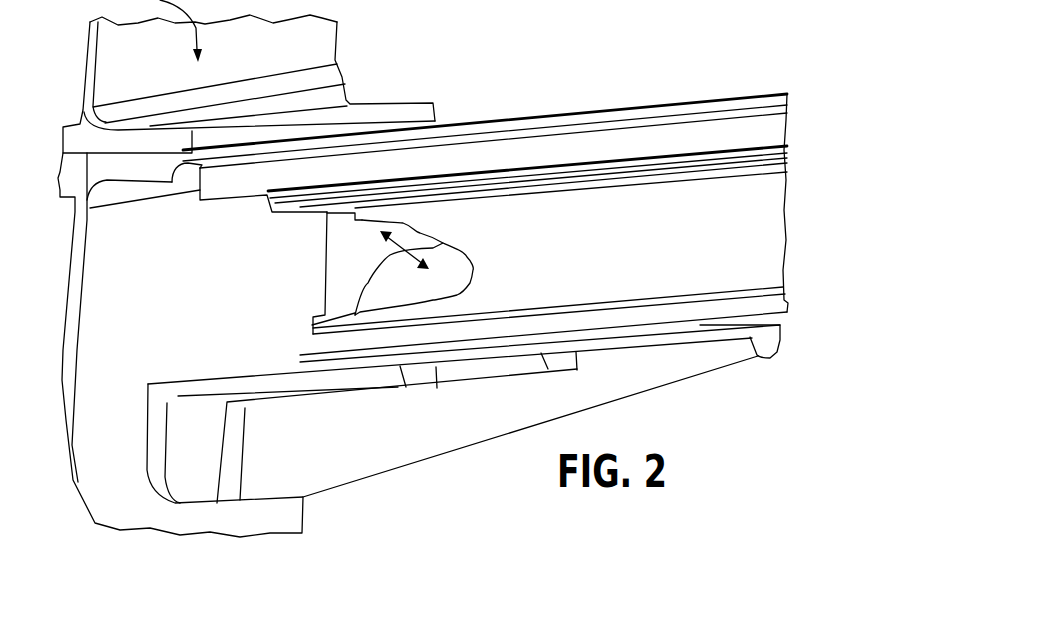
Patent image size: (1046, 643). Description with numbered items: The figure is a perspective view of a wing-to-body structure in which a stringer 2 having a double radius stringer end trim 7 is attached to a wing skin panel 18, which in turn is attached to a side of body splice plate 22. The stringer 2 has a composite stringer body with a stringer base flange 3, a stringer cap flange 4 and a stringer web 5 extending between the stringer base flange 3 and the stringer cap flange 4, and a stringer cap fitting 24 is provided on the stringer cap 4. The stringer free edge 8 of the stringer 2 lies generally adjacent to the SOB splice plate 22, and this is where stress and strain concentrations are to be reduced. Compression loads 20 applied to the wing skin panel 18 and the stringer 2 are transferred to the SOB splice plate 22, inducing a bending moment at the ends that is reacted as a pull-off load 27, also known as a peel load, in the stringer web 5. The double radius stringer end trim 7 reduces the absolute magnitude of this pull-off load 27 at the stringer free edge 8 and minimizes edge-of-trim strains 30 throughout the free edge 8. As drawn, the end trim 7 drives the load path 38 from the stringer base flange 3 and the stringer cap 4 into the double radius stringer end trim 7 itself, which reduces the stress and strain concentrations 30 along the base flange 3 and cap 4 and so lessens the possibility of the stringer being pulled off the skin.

The stringer 2 is at (308, 182).
The stringer base flange 3 is at (752, 162).
The stringer cap flange 4 is at (668, 315).
The stringer web 5 is at (590, 220).
The double radius stringer end trim 7 is at (350, 270).
The stringer free edge 8 is at (327, 217).
The wing skin panel 18 is at (733, 134).
The compression loads 20 is at (878, 186).
The side of body splice plate 22 is at (131, 174).
The stringer cap fitting 24 is at (445, 422).
The pull-off load 27 is at (458, 197).
The edge-of-trim strains 30 is at (357, 313).
The load path 38 is at (433, 236).